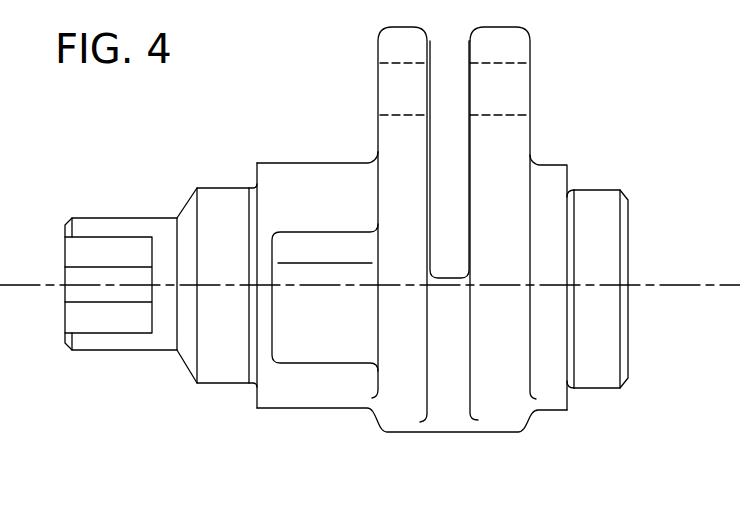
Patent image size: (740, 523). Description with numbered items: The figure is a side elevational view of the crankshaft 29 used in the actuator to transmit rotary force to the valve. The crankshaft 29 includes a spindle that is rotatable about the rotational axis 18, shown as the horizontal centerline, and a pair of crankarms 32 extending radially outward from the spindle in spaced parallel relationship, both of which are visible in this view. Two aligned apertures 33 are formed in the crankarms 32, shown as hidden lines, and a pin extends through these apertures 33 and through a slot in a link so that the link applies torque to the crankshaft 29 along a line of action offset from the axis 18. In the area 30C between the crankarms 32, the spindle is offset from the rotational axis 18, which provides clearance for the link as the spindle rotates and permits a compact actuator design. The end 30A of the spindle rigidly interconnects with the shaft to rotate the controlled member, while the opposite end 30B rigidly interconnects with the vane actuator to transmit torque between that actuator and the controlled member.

The axis 18 is at (0, 285).
The crankshaft 29 is at (365, 431).
The end of spindle 30A is at (110, 342).
The end of spindle 30B is at (603, 372).
The area between the crankarms 30C is at (450, 405).
The crankarms 32 is at (390, 131).
The apertures 33 is at (407, 64).